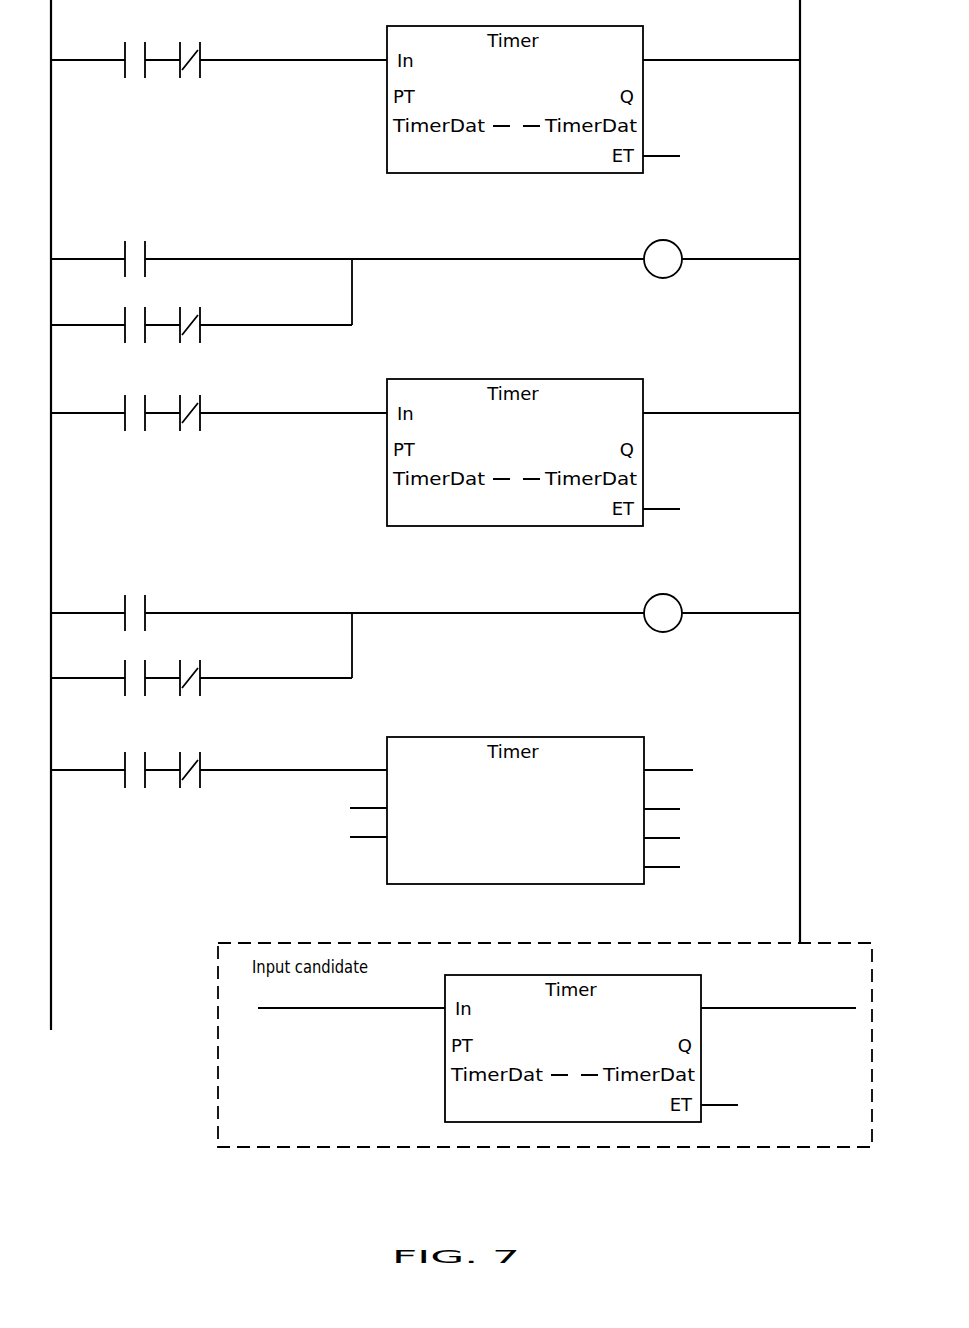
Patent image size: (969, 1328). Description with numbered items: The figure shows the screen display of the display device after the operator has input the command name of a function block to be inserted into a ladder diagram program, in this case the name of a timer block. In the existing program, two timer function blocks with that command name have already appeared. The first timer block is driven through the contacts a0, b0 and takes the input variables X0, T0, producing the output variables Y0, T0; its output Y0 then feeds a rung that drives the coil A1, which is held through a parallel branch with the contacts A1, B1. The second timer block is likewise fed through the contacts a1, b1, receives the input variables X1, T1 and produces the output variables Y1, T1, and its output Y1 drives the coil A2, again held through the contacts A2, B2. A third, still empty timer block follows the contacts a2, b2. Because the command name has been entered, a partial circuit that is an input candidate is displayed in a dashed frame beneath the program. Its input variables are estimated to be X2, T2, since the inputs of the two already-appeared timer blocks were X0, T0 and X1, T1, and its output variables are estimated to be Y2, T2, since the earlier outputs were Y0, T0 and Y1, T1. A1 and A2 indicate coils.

The normally open contact a0 is at (134, 47).
The normally closed contact b0 is at (189, 47).
The input variable X0 is at (387, 97).
The input and output variable T0 is at (387, 126).
The output variable Y0 is at (680, 97).
The coil A1 is at (402, 280).
The normally closed contact B1 is at (190, 312).
The normally open contact a1 is at (134, 401).
The normally closed contact b1 is at (189, 401).
The input variable X1 is at (387, 450).
The input and output variable T1 is at (387, 479).
The output variable Y1 is at (680, 450).
The coil A2 is at (402, 634).
The normally closed contact B2 is at (190, 665).
The normally open contact a2 is at (134, 758).
The normally closed contact b2 is at (189, 758).
The estimated input variable X2 is at (445, 1046).
The estimated input and output variable T2 is at (445, 1075).
The estimated output variable Y2 is at (701, 1046).